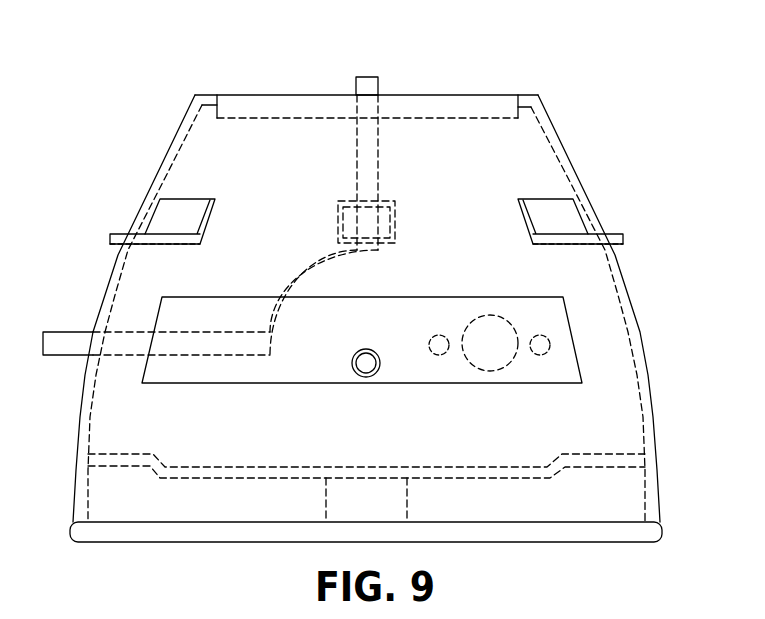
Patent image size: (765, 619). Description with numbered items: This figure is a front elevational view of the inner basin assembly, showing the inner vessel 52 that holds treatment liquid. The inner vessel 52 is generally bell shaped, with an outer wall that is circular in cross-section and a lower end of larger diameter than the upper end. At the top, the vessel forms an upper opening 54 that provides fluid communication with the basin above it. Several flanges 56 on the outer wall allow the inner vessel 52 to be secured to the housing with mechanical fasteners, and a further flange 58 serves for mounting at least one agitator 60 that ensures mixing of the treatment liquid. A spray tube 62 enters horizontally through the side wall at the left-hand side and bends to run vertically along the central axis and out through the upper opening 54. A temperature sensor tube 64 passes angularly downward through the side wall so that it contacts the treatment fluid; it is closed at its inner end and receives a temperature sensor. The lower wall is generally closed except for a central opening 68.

The inner vessel 52 is at (125, 156).
The upper opening 54 is at (260, 118).
The flanges 56 is at (624, 240).
The flange 58 is at (213, 384).
The agitator 60 is at (488, 315).
The spray tube 62 is at (370, 77).
The temperature sensor tube 64 is at (366, 378).
The central opening 68 is at (327, 497).